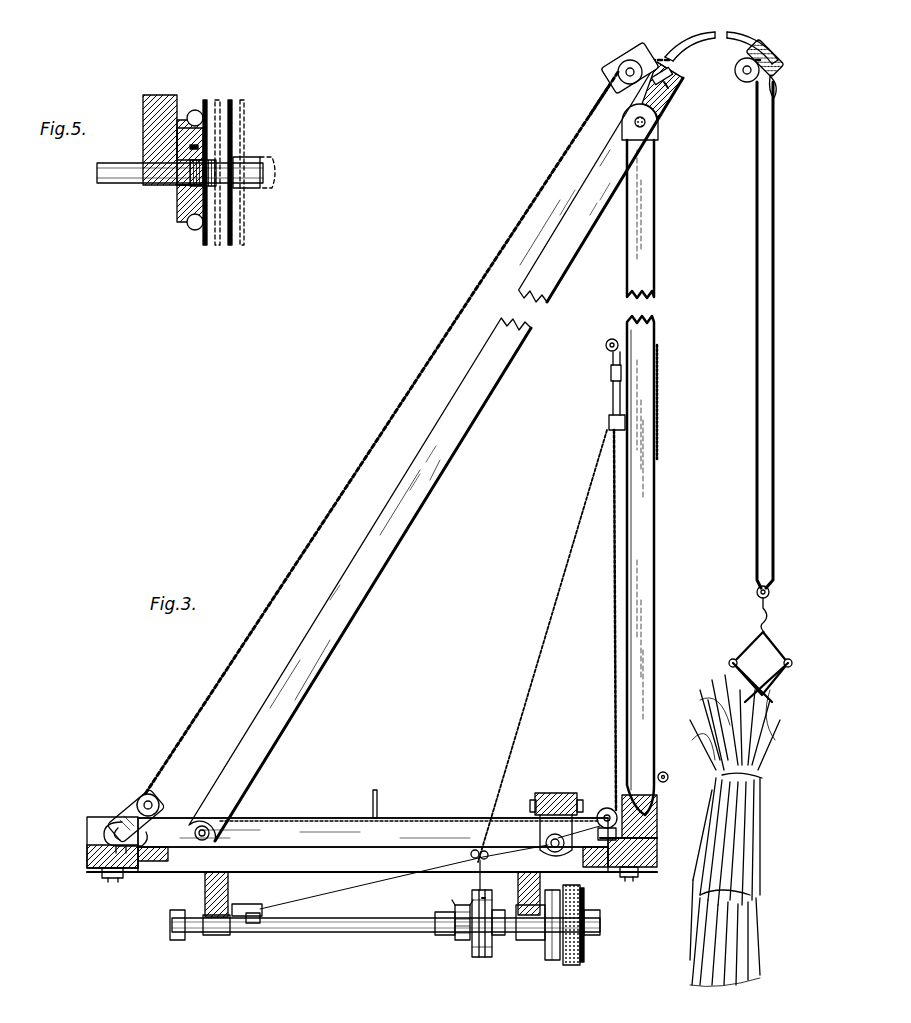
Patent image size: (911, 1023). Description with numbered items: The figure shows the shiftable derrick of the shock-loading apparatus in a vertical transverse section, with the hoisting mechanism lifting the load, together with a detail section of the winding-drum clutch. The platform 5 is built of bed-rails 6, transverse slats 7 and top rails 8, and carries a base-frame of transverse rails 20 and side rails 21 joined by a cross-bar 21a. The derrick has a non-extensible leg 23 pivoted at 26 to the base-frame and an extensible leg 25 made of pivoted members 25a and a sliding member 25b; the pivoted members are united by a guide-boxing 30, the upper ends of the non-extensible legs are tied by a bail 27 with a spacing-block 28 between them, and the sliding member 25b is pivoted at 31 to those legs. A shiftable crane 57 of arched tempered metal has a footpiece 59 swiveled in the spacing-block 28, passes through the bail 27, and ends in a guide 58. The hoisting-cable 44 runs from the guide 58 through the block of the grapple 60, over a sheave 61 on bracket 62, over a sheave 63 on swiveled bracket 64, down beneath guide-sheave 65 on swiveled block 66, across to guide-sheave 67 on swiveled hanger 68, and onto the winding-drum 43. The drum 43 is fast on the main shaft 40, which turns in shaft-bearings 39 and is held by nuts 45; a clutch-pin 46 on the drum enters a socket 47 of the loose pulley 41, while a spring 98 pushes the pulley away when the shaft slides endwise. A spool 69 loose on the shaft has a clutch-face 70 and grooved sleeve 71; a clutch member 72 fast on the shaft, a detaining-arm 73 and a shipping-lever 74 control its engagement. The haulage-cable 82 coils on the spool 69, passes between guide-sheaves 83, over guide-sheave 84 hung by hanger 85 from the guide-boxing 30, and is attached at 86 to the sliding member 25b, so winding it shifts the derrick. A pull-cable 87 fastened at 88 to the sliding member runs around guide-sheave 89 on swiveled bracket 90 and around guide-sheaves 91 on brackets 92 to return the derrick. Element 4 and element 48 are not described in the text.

In FIG. 3, the hoisting rope 4 is at (755, 538).
In FIG. 3, the platform 5 is at (334, 818).
In FIG. 5, the bed-rails 6 is at (150, 103).
In FIG. 3, the bed-rails 6 is at (205, 888).
In FIG. 3, the transverse slats 7 is at (312, 868).
In FIG. 3, the top rails 8 is at (150, 862).
In FIG. 3, the rails 20 is at (470, 818).
In FIG. 3, the side rails 21 is at (92, 868).
In FIG. 3, the cross-bar 21a is at (570, 793).
In FIG. 3, the non-extensible leg 23 is at (340, 636).
In FIG. 3, the extensible leg 25 is at (657, 540).
In FIG. 3, the pivoted members 25a is at (658, 822).
In FIG. 3, the sliding member 25b is at (650, 462).
In FIG. 3, the pivot 26 is at (201, 826).
In FIG. 3, the bail 27 is at (674, 91).
In FIG. 3, the spacing-block 28 is at (660, 125).
In FIG. 3, the guide-boxing 30 is at (660, 397).
In FIG. 3, the pivot 31 is at (635, 123).
In FIG. 3, the shaft-bearings 39 is at (213, 936).
In FIG. 5, the main shaft 40 is at (110, 182).
In FIG. 3, the main shaft 40 is at (365, 933).
In FIG. 5, the pulley 41 is at (183, 205).
In FIG. 3, the pulley 41 is at (550, 962).
In FIG. 5, the winding-drum 43 is at (232, 240).
In FIG. 3, the winding-drum 43 is at (583, 962).
In FIG. 3, the hoisting-cable 44 is at (226, 666).
In FIG. 5, the nuts 45 is at (262, 165).
In FIG. 3, the nuts 45 is at (600, 915).
In FIG. 5, the clutch-pin 46 is at (195, 125).
In FIG. 5, the socket 47 is at (188, 148).
In FIG. 3, the shaft end cap 48 is at (170, 925).
In FIG. 3, the shiftable crane 57 is at (714, 30).
In FIG. 3, the guide 58 is at (756, 95).
In FIG. 3, the footpiece 59 is at (612, 92).
In FIG. 3, the grapple 60 is at (756, 636).
In FIG. 3, the sheave 61 is at (738, 76).
In FIG. 3, the bracket 62 is at (760, 48).
In FIG. 3, the sheave 63 is at (652, 70).
In FIG. 3, the swiveled bracket 64 is at (614, 60).
In FIG. 3, the guide-sheave 65 is at (160, 800).
In FIG. 3, the swiveled block 66 is at (124, 796).
In FIG. 3, the guide-sheave 67 is at (546, 838).
In FIG. 3, the swiveled hanger 68 is at (545, 793).
In FIG. 3, the spool 69 is at (476, 958).
In FIG. 3, the clutch-face 70 is at (462, 942).
In FIG. 3, the grooved sleeve 71 is at (500, 937).
In FIG. 3, the clutch member 72 is at (438, 935).
In FIG. 3, the detaining-arm 73 is at (460, 904).
In FIG. 3, the shipping-lever 74 is at (488, 905).
In FIG. 3, the haulage-cable 82 is at (530, 702).
In FIG. 3, the guide-sheaves 83 is at (472, 852).
In FIG. 3, the guide-sheave 84 is at (608, 422).
In FIG. 3, the hanger 85 is at (610, 380).
In FIG. 3, the attachment point 86 is at (669, 777).
In FIG. 3, the pull-cable 87 is at (613, 630).
In FIG. 3, the fastening point 88 is at (606, 342).
In FIG. 3, the guide-sheave 89 is at (606, 808).
In FIG. 3, the swiveled bracket 90 is at (640, 838).
In FIG. 3, the guide-sheaves 91 is at (252, 924).
In FIG. 3, the brackets 92 is at (244, 906).
In FIG. 5, the spring 98 is at (188, 215).